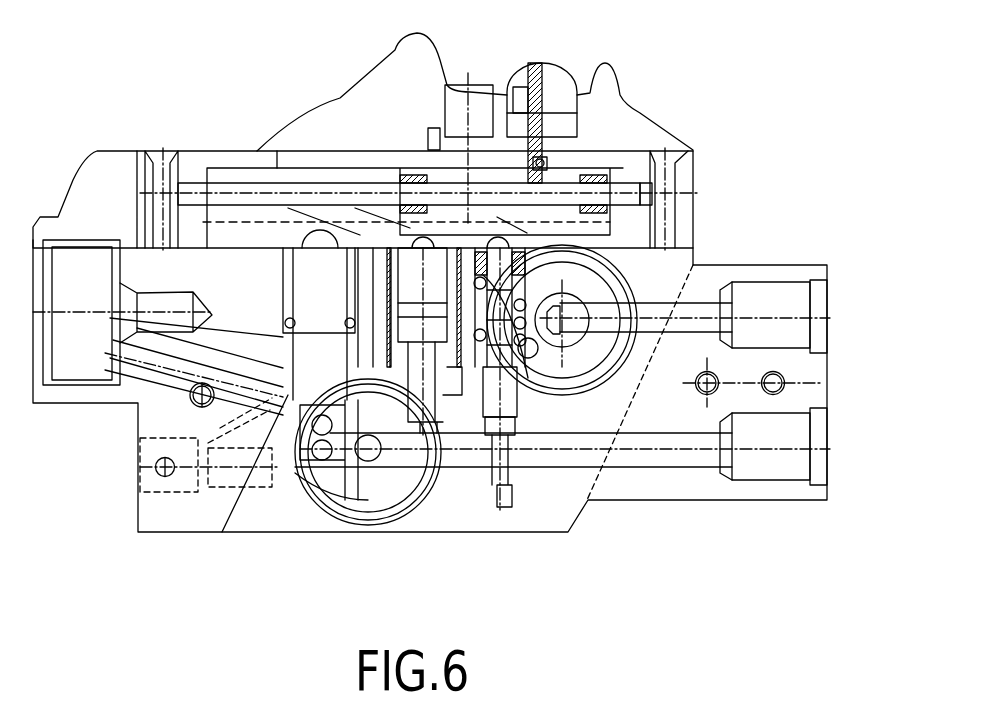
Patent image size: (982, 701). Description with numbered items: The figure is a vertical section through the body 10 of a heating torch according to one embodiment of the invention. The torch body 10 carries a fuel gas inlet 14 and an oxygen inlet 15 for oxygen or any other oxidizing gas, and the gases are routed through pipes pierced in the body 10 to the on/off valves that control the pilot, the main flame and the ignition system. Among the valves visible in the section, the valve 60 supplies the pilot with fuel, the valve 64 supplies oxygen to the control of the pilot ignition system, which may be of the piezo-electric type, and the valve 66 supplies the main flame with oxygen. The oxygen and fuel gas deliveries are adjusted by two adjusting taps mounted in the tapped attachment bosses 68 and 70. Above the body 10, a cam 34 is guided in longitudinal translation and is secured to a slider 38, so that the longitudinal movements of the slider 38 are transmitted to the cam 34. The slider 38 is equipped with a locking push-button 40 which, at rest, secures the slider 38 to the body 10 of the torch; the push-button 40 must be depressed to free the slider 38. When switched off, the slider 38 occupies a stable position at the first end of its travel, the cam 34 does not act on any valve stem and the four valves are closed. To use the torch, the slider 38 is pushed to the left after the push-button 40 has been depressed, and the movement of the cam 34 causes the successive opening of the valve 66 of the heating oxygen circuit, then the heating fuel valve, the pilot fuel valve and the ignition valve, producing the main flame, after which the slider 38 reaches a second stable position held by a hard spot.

The body of the torch 10 is at (182, 518).
The fuel gas inlet 14 is at (785, 310).
The oxygen inlet 15 is at (795, 460).
The cam 34 is at (642, 220).
The slider 38 is at (630, 120).
The locking push-button 40 is at (545, 78).
The valve 60 is at (513, 407).
The valve 64 is at (440, 437).
The valve 66 is at (313, 353).
The tapped attachment boss 68 is at (578, 352).
The tapped attachment boss 70 is at (368, 500).